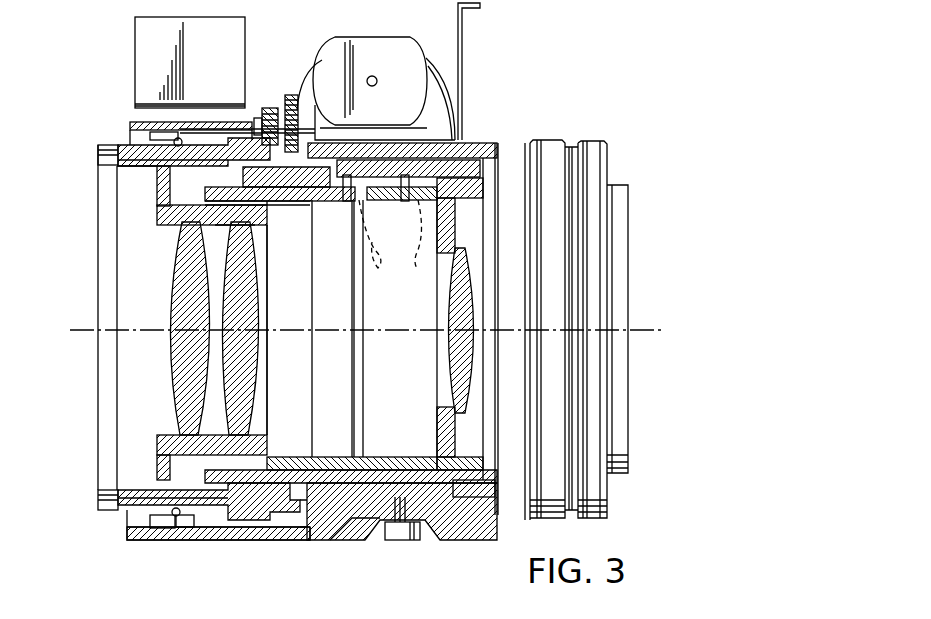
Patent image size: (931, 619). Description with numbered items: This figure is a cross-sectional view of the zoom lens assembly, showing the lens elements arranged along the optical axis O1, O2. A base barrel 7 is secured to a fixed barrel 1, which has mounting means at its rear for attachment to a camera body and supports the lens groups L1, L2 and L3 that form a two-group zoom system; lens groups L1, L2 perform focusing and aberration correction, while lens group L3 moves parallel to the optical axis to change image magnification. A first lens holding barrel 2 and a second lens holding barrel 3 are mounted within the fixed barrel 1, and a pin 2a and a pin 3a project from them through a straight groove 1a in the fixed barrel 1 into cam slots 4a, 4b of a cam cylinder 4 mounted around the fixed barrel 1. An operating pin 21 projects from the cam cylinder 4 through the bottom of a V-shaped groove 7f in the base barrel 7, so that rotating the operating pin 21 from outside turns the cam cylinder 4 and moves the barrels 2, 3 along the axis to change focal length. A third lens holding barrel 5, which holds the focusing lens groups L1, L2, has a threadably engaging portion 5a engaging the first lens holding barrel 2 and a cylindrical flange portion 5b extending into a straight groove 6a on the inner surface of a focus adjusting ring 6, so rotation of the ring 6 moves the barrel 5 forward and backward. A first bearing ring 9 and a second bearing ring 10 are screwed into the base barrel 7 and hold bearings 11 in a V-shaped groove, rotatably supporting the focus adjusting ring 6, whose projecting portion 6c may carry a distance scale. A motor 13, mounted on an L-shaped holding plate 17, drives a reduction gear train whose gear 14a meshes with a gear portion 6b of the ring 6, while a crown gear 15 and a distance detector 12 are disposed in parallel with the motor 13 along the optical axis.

The fixed barrel 1 is at (480, 185).
The straight groove 1a is at (462, 152).
The first lens holding barrel 2 is at (330, 210).
The pin 2a is at (345, 185).
The second lens holding barrel 3 is at (400, 457).
The pin 3a is at (405, 200).
The cam cylinder 4 is at (470, 176).
The cam slot 4a is at (375, 249).
The cam slot 4b is at (412, 238).
The third lens holding barrel 5 is at (262, 445).
The threadably engaging portion 5a is at (250, 228).
The cylindrical flange portion 5b is at (160, 188).
The focus adjusting ring 6 is at (130, 153).
The straight groove 6a is at (140, 165).
The gear portion 6b is at (248, 128).
The projecting portion 6c is at (108, 147).
The base barrel 7 is at (312, 545).
The groove 7f is at (372, 542).
The first bearing ring 9 is at (184, 530).
The second bearing ring 10 is at (150, 522).
The bearings 11 is at (165, 533).
The distance detector 12 is at (143, 33).
The motor 13 is at (342, 44).
The drive transmitting gear 14a is at (269, 108).
The crown gear 15 is at (437, 118).
The holding plate 17 is at (463, 37).
The operating pin 21 is at (412, 540).
The lens group L1 is at (178, 370).
The lens group L2 is at (260, 360).
The lens group L3 is at (450, 345).
The optical axis O1 is at (353, 330).
The optical axis O2 is at (683, 333).